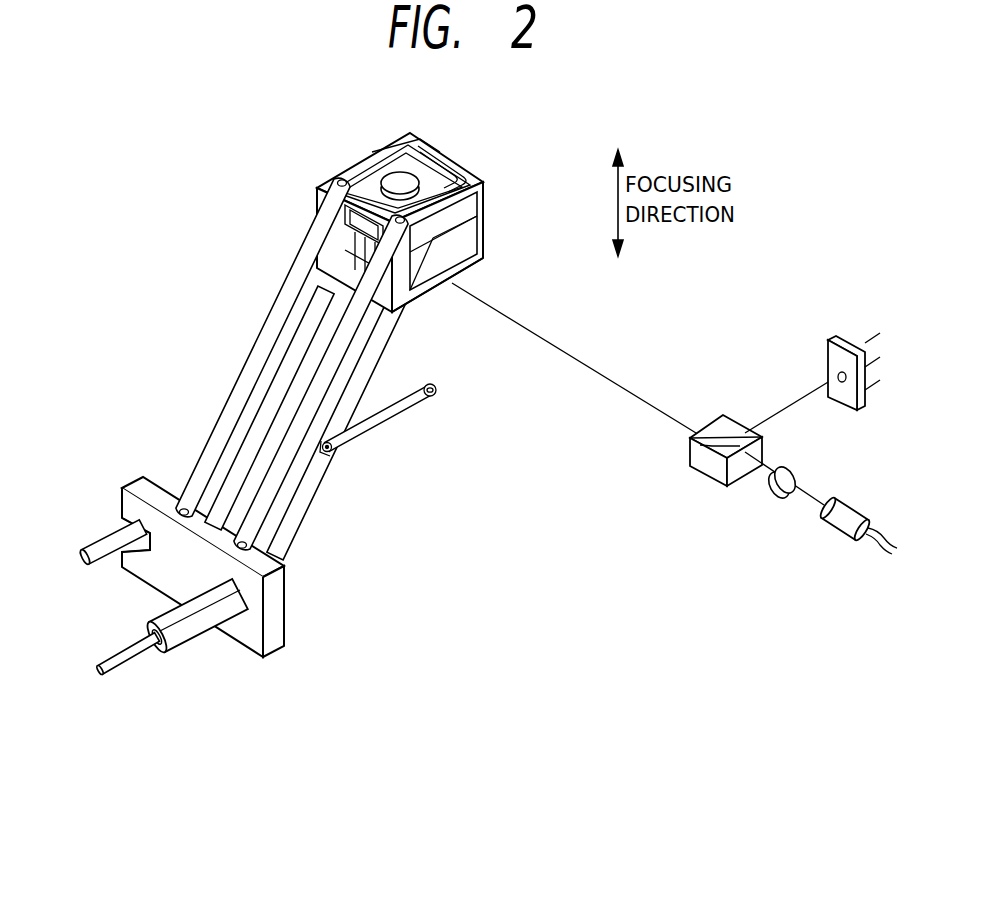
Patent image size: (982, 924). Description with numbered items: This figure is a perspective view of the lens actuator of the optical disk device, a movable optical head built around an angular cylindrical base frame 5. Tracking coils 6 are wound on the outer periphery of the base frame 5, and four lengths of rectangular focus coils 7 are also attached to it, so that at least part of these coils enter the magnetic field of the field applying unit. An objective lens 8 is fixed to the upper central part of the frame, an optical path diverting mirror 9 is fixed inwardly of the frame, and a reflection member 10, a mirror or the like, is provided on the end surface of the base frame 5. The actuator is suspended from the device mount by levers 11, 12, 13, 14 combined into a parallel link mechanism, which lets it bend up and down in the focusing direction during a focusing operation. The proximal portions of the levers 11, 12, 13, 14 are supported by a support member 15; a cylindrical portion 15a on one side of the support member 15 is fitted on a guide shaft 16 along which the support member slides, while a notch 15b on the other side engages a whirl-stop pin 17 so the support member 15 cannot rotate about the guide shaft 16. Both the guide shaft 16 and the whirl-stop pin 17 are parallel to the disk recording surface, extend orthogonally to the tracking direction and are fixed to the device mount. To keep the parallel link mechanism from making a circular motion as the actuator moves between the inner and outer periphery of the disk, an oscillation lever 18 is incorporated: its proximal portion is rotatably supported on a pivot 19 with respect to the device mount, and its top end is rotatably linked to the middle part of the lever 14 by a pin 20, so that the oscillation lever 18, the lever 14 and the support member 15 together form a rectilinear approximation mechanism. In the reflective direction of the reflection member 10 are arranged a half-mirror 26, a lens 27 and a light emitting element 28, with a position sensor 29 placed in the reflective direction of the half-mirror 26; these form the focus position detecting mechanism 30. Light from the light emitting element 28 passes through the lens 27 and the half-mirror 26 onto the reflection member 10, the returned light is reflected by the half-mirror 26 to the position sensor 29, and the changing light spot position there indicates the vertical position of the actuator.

The base frame 5 is at (487, 187).
The tracking coils 6 is at (372, 152).
The focus coils 7 is at (334, 217).
The objective lens 8 is at (428, 148).
The optical path diverting mirror 9 is at (470, 270).
The reflection member 10 is at (455, 280).
The lever 11 is at (263, 347).
The lever 12 is at (258, 430).
The lever 13 is at (317, 397).
The lever 14 is at (364, 372).
The support member 15 is at (257, 605).
The cylindrical portion 15a is at (188, 623).
The notch 15b is at (118, 518).
The guide shaft 16 is at (132, 653).
The whirl-stop pin 17 is at (112, 568).
The oscillation lever 18 is at (410, 407).
The pivot 19 is at (438, 390).
The pin 20 is at (330, 458).
The half-mirror 26 is at (707, 463).
The lens 27 is at (783, 497).
The light emitting element 28 is at (843, 500).
The position sensor 29 is at (828, 348).
The focus position detecting mechanism 30 is at (750, 511).